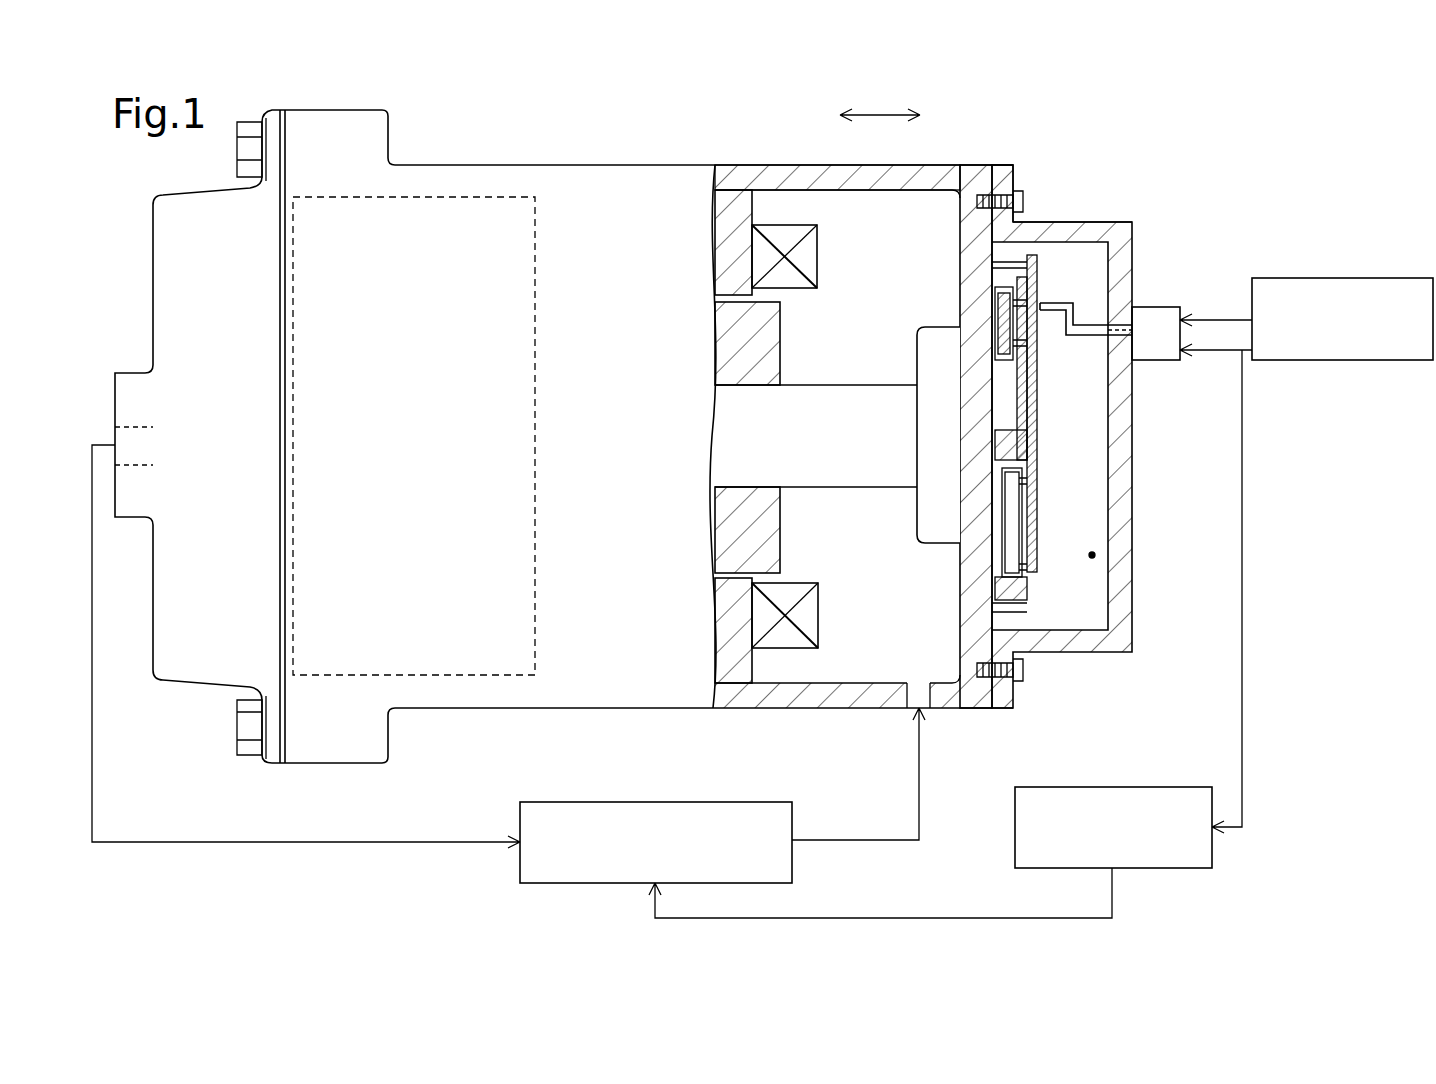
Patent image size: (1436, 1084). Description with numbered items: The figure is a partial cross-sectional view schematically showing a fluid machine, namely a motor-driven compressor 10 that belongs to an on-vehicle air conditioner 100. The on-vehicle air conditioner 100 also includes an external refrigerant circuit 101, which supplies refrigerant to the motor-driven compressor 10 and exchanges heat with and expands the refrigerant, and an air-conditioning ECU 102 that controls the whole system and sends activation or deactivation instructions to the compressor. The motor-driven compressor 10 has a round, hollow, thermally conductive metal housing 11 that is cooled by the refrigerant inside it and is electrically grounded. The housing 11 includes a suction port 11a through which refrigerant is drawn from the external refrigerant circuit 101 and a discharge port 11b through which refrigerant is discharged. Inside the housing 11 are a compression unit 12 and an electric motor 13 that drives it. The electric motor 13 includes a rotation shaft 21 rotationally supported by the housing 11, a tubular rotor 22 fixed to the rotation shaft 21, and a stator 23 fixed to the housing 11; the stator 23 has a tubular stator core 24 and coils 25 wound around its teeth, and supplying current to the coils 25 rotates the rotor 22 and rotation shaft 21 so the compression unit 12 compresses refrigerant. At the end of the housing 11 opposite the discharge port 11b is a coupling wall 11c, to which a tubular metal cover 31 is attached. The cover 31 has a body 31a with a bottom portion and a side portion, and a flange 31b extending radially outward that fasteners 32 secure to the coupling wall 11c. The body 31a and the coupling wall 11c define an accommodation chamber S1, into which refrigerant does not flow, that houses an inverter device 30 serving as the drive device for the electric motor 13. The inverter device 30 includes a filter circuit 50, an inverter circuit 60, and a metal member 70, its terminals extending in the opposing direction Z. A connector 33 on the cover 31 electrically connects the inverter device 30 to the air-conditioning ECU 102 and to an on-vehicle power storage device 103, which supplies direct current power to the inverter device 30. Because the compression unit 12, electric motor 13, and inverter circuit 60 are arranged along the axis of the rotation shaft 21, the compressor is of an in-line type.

The on-vehicle air conditioner 100 is at (1199, 143).
The motor-driven compressor 10 is at (587, 156).
The housing 11 is at (515, 165).
The suction port 11a is at (925, 692).
The discharge port 11b is at (112, 437).
The coupling wall 11c is at (968, 250).
The compression unit 12 is at (452, 197).
The electric motor 13 is at (756, 180).
The rotation shaft 21 is at (846, 470).
The rotor 22 is at (780, 333).
The stator 23 is at (877, 230).
The stator core 24 is at (765, 238).
The coils 25 is at (805, 266).
The inverter device 30 is at (1058, 443).
The cover 31 is at (1145, 238).
The body 31a is at (1103, 225).
The flange 31b is at (1003, 178).
The fasteners 32 is at (1025, 200).
The connector 33 is at (1168, 306).
The filter circuit 50 is at (987, 316).
The inverter circuit 60 is at (995, 546).
The metal member 70 is at (1030, 455).
The accommodation chamber S1 is at (1092, 555).
The opposing direction Z is at (880, 103).
The external refrigerant circuit 101 is at (748, 801).
The air-conditioning ECU 102 is at (1150, 787).
The on-vehicle power storage device 103 is at (1362, 278).